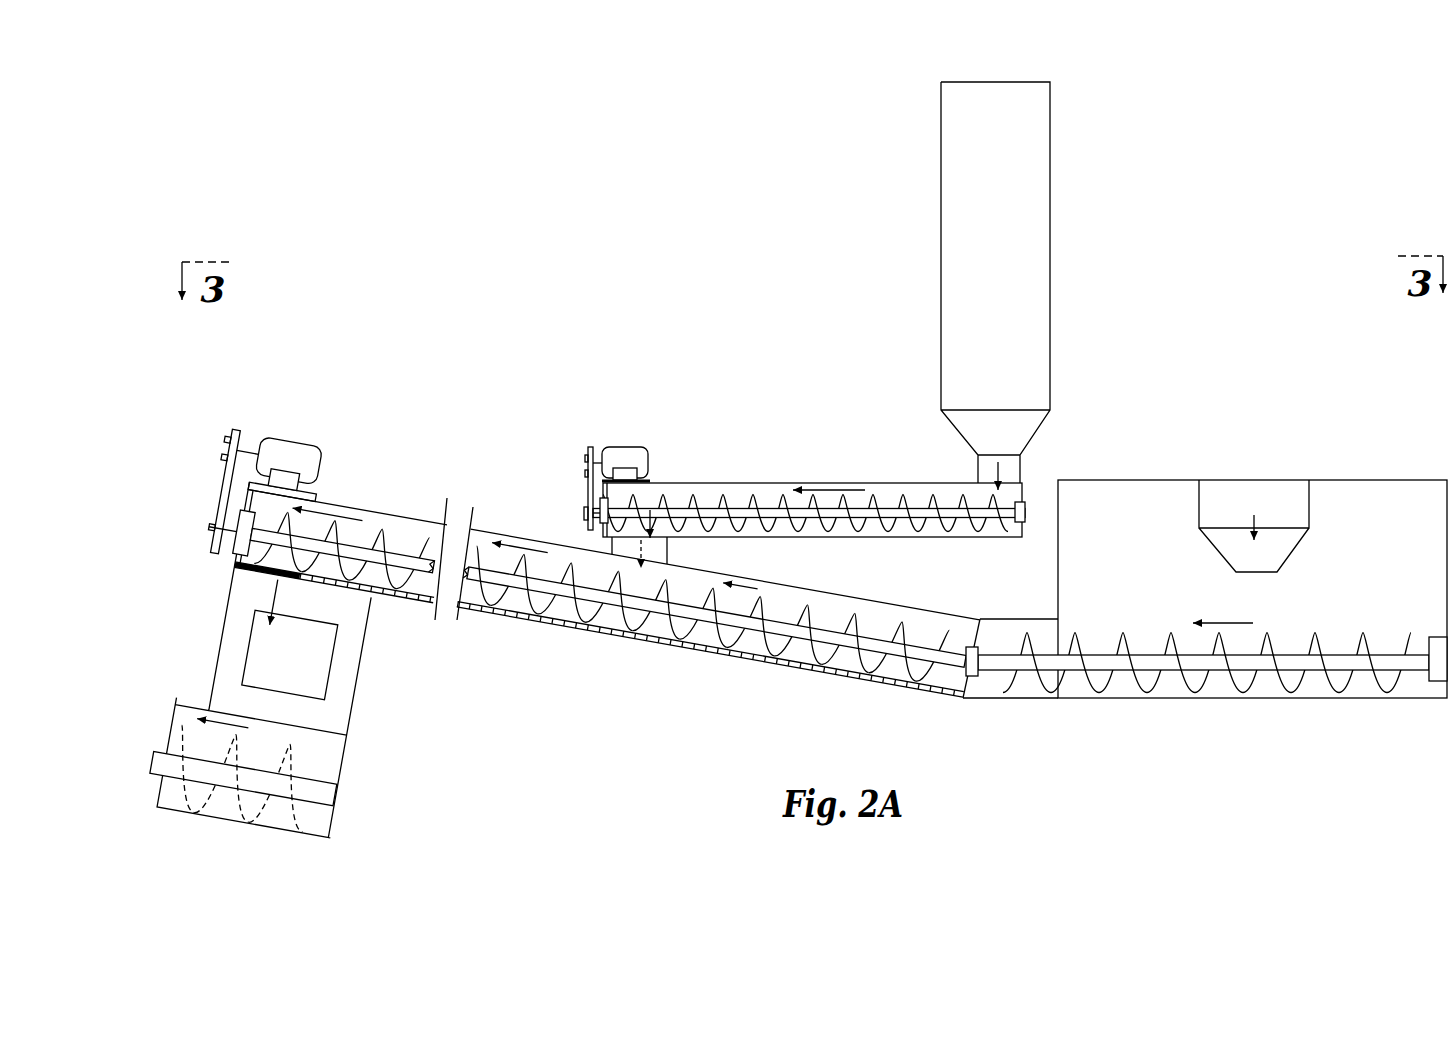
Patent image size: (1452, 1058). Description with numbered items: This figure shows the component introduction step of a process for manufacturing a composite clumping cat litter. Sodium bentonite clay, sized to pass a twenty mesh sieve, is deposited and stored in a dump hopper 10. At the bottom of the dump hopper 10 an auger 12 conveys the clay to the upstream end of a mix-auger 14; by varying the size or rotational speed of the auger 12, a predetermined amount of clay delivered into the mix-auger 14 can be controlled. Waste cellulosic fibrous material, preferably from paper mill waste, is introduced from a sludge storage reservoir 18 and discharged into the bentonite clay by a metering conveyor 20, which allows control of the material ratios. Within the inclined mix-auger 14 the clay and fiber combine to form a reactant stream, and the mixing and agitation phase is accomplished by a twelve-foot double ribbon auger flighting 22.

The dump hopper 10 is at (1357, 480).
The auger 12 is at (1276, 662).
The mix-auger 14 is at (670, 608).
The sludge storage reservoir 18 is at (1022, 251).
The metering conveyor 20 is at (743, 508).
The double ribbon auger flighting 22 is at (287, 755).